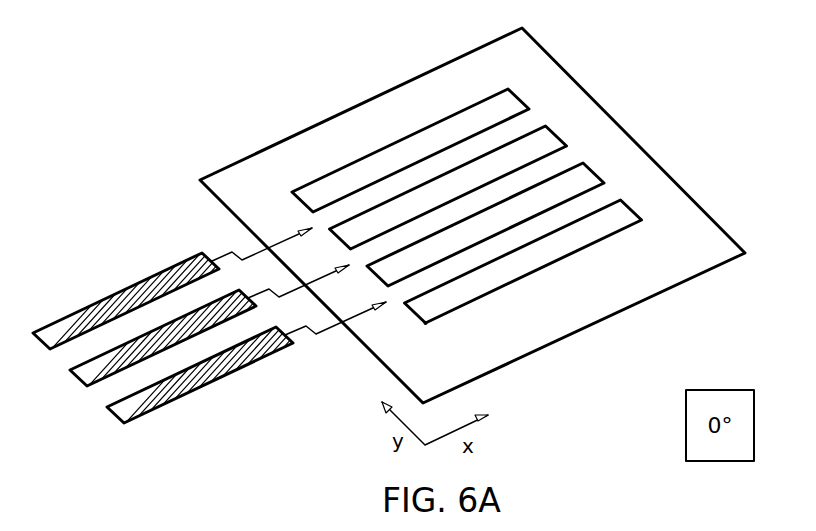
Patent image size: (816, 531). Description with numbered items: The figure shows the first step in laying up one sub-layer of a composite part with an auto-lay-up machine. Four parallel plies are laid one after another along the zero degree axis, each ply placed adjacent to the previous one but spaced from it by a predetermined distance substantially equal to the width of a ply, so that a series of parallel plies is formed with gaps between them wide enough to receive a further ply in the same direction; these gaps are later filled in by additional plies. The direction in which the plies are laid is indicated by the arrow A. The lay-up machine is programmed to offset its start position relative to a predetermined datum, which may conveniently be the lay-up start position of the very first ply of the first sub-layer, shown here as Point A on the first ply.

The arrow indicating lay-up direction A is at (255, 253).
The lay-up start position datum Point A is at (426, 323).